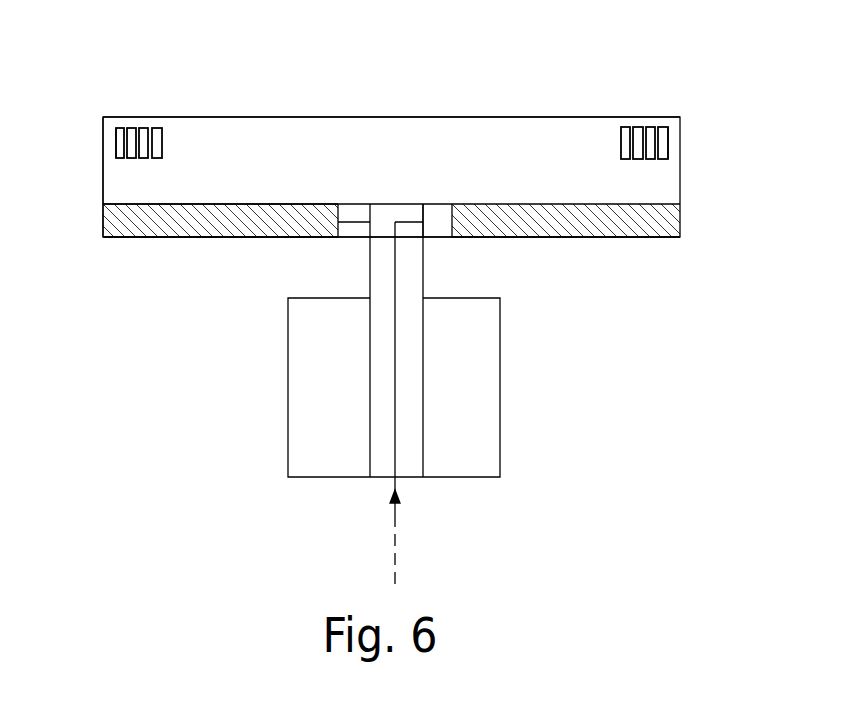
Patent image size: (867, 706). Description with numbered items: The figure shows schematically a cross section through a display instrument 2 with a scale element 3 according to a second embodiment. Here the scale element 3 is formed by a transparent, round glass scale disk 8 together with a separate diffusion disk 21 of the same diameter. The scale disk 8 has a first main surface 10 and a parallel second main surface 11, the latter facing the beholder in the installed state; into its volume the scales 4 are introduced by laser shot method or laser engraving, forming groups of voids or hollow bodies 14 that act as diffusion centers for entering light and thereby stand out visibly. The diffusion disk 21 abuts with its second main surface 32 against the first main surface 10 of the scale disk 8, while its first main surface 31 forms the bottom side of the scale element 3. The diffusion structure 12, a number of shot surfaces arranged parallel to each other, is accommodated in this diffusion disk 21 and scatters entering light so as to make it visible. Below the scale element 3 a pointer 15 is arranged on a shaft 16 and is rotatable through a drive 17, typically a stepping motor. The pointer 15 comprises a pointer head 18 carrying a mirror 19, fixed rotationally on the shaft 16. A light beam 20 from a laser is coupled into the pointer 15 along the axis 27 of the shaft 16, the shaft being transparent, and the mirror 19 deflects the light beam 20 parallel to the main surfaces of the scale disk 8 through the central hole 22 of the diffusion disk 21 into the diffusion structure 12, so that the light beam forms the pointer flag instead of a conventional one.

The display instrument 2 is at (617, 345).
The scale element 3 is at (85, 213).
The scales 4 is at (115, 145).
The scale disk 8 is at (667, 185).
The first main surface 10 is at (282, 222).
The second main surface 11 is at (272, 115).
The diffusion structure 12 is at (583, 222).
The voids or hollow bodies 14 is at (157, 128).
The pointer 15 is at (403, 243).
The shaft 16 is at (383, 453).
The drive 17 is at (470, 408).
The pointer head 18 is at (400, 215).
The mirror 19 is at (398, 231).
The light beam 20 is at (394, 505).
The diffusion disk 21 is at (668, 222).
The central hole 22 is at (435, 232).
The axis 27 is at (394, 562).
The first main surface 31 is at (195, 242).
The second main surface 32 is at (207, 203).